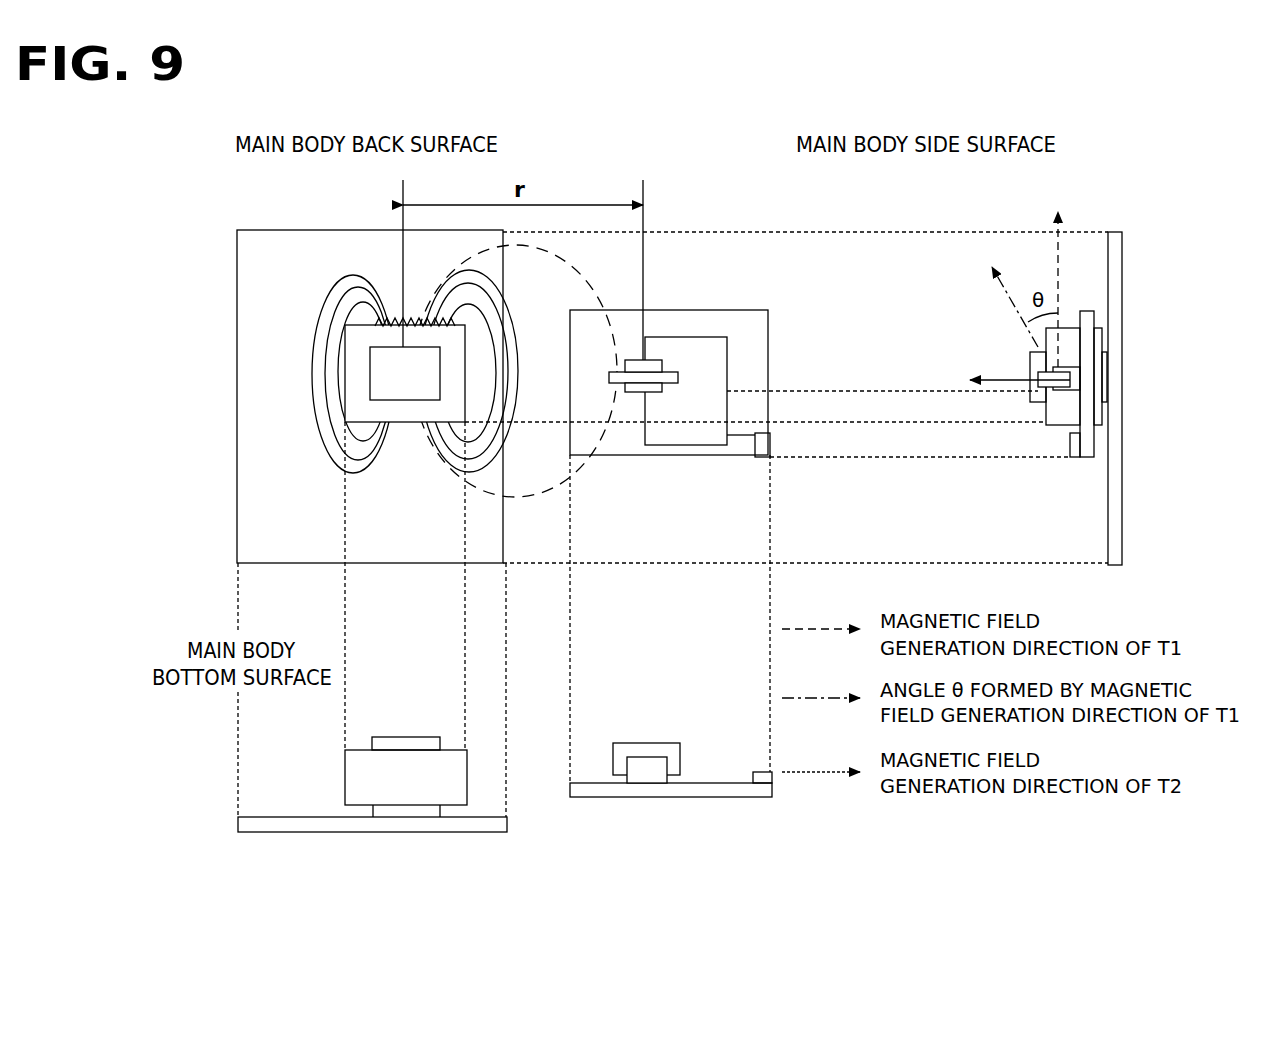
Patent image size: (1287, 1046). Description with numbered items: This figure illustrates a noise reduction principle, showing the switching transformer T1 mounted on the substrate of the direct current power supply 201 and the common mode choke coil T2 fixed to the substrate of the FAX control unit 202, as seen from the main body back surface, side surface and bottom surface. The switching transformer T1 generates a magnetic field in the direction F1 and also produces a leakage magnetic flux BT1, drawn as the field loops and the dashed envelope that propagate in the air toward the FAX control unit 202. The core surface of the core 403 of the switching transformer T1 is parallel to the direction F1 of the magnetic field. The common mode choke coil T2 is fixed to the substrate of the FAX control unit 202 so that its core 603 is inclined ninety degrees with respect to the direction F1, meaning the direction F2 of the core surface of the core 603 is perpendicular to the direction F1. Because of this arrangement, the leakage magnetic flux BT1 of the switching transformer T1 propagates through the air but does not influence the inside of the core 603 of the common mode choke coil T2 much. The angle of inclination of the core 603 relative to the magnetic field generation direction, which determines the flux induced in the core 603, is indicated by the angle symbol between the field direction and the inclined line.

The direct current power supply 201 is at (312, 232).
The FAX control unit 202 is at (753, 315).
The core 403 is at (355, 350).
The core 603 is at (677, 378).
The switching transformer T1 is at (405, 537).
The common mode choke coil T2 is at (651, 560).
The leakage magnetic flux BT1 is at (602, 298).
The direction of the magnetic field F1 is at (1061, 273).
The direction of the core surface F2 is at (1004, 374).